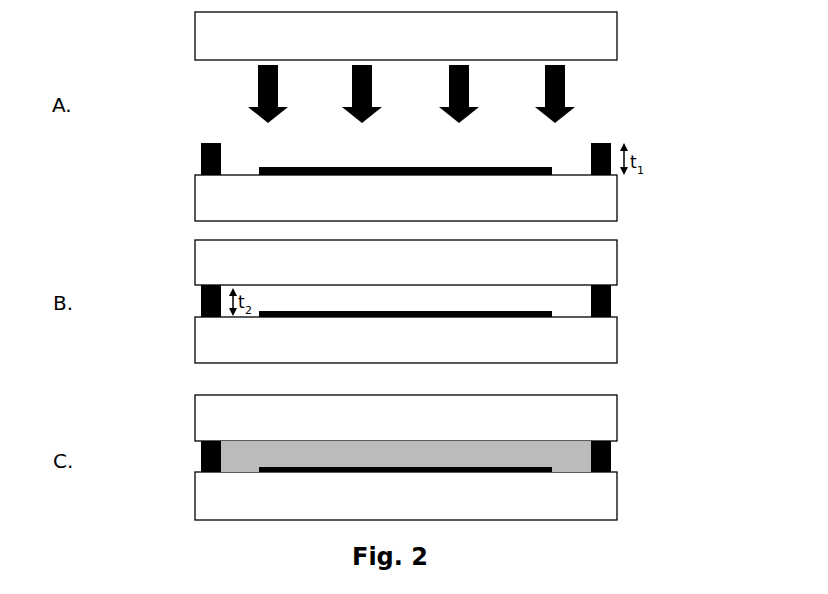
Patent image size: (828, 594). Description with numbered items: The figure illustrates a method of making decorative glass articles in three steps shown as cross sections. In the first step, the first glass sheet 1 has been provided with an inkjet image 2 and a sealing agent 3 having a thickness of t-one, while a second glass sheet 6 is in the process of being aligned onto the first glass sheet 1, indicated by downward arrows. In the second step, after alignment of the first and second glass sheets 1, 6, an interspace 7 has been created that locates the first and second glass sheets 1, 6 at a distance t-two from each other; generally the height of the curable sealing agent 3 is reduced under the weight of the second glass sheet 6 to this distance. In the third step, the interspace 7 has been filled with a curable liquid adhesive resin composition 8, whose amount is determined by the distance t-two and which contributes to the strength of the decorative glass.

The first glass sheet 1 is at (602, 199).
The inkjet image 2 is at (533, 170).
The sealing agent 3 is at (201, 148).
The second glass sheet 6 is at (208, 40).
The interspace 7 is at (558, 312).
The curable liquid adhesive resin composition 8 is at (235, 462).